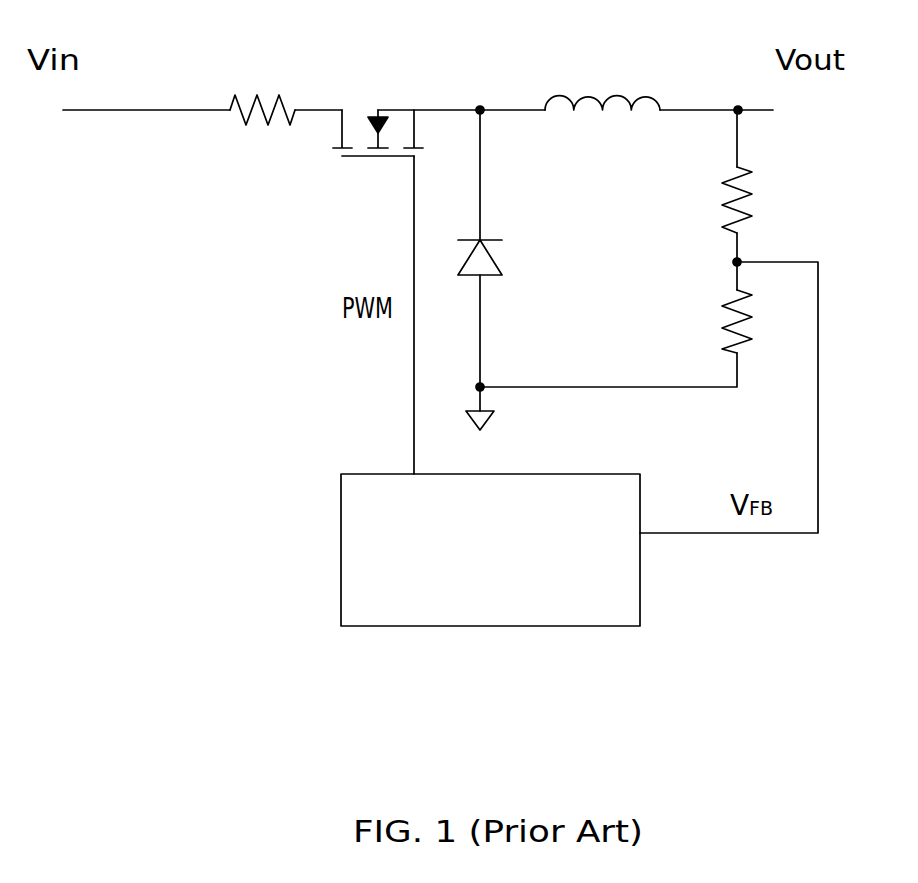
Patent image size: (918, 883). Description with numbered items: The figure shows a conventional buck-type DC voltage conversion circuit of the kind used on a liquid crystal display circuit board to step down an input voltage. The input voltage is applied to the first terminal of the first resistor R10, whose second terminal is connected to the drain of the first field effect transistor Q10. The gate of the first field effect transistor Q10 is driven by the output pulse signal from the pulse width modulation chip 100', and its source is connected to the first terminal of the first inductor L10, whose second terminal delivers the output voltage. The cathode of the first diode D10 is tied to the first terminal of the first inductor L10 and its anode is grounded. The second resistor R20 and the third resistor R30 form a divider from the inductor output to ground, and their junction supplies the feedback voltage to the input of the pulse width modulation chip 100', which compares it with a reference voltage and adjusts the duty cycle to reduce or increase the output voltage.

The pulse width modulation chip 100' is at (405, 550).
The first resistor R10 is at (262, 84).
The first field effect transistor Q10 is at (378, 100).
The first inductor L10 is at (602, 77).
The first diode D10 is at (514, 258).
The second resistor R20 is at (776, 200).
The third resistor R30 is at (696, 321).